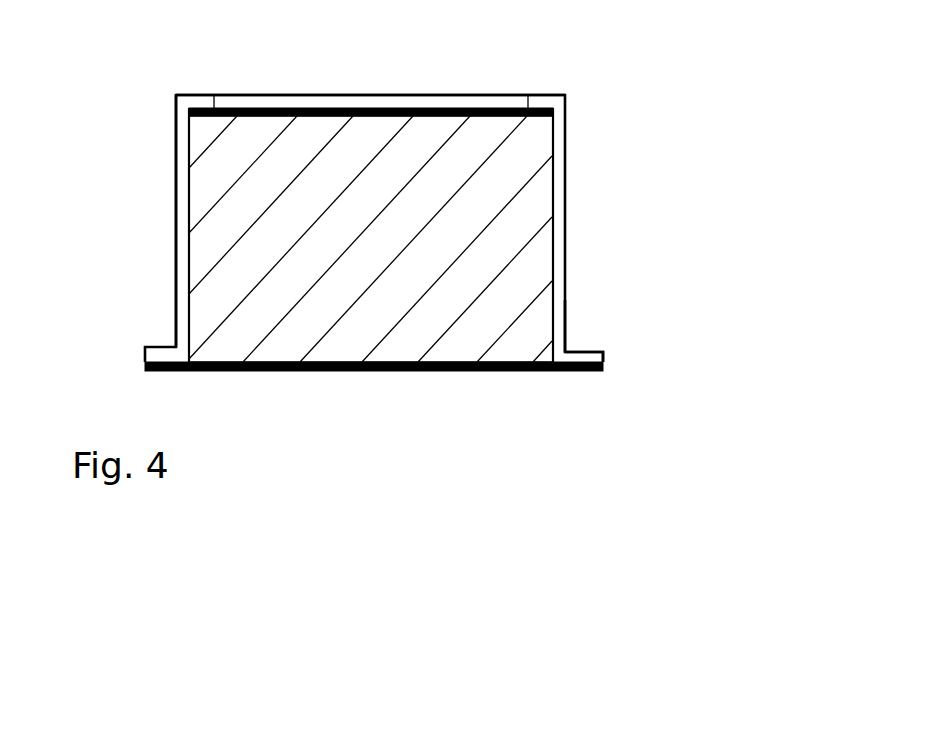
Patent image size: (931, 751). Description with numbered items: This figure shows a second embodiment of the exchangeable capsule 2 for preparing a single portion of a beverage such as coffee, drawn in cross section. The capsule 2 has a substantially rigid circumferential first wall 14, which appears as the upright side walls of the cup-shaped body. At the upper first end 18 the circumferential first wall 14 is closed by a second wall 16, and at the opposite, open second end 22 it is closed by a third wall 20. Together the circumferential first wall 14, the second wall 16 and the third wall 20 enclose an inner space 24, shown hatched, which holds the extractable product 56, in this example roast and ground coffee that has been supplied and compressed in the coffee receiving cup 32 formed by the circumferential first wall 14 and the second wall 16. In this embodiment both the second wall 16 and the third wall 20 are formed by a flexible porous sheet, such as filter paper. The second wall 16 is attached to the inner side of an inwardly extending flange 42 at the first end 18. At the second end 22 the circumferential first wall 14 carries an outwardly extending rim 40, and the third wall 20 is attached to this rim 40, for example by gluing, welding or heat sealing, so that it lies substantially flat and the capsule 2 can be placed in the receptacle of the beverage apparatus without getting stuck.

The capsule 2 is at (717, 422).
The circumferential first wall 14 is at (562, 233).
The second wall 16 is at (495, 112).
The first end 18 is at (558, 123).
The third wall 20 is at (522, 372).
The second end 22 is at (557, 342).
The inner space 24 is at (188, 277).
The coffee receiving cup 32 is at (173, 143).
The outwardly extending rim 40 is at (592, 360).
The inwardly extending flange 42 is at (540, 98).
The core material 56 is at (210, 250).